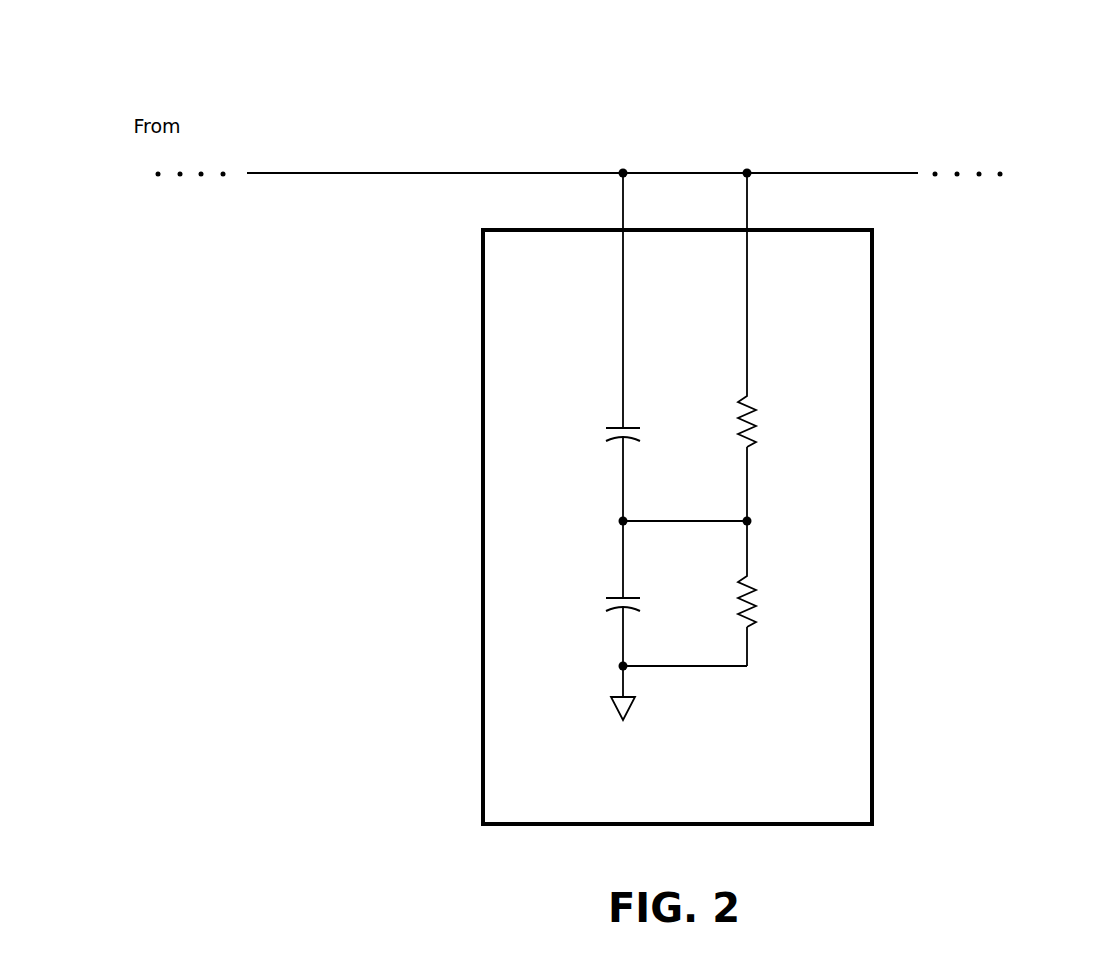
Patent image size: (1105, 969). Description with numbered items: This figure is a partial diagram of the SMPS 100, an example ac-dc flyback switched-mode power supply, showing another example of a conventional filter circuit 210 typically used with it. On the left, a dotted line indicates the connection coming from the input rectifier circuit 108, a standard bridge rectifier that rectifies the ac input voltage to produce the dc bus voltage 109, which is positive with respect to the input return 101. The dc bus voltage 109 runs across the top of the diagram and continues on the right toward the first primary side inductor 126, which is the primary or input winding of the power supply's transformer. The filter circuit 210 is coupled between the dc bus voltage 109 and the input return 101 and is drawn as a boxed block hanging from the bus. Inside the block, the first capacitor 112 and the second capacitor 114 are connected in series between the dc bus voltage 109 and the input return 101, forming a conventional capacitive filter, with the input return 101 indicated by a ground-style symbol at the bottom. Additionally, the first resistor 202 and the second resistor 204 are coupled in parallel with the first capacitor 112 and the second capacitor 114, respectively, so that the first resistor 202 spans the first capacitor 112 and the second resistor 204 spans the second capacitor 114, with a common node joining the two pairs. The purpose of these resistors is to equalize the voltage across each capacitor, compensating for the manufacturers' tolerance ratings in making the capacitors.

The SMPS 100 is at (722, 45).
The input return 101 is at (613, 690).
The input rectifier circuit 108 is at (162, 160).
The Vdc 109 is at (303, 145).
The capacitor C1 112 is at (606, 430).
The capacitor C2 114 is at (606, 603).
The first primary side inductor L1 126 is at (981, 159).
The resistor R1 202 is at (763, 412).
The resistor R2 204 is at (763, 593).
The filter circuit 210 is at (677, 527).